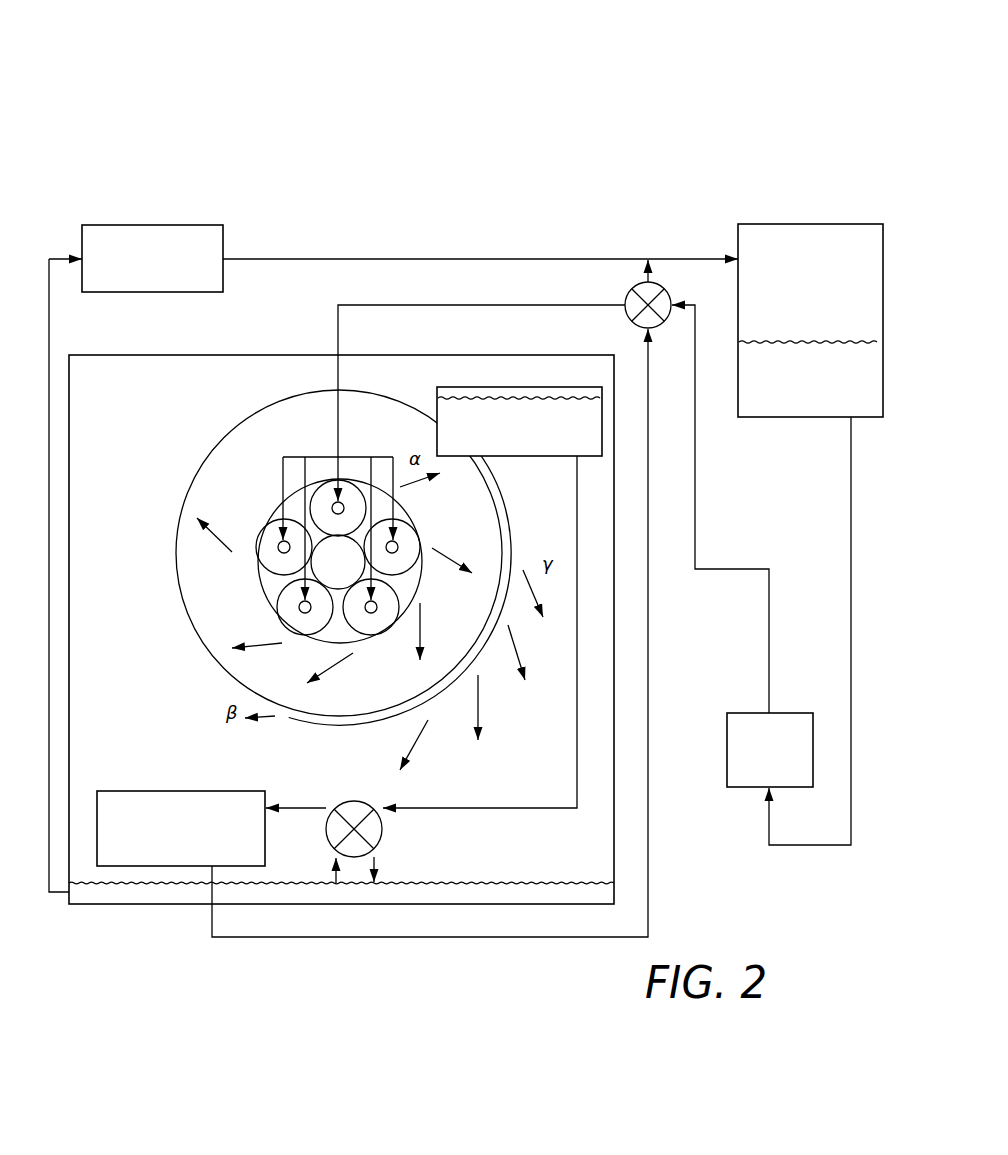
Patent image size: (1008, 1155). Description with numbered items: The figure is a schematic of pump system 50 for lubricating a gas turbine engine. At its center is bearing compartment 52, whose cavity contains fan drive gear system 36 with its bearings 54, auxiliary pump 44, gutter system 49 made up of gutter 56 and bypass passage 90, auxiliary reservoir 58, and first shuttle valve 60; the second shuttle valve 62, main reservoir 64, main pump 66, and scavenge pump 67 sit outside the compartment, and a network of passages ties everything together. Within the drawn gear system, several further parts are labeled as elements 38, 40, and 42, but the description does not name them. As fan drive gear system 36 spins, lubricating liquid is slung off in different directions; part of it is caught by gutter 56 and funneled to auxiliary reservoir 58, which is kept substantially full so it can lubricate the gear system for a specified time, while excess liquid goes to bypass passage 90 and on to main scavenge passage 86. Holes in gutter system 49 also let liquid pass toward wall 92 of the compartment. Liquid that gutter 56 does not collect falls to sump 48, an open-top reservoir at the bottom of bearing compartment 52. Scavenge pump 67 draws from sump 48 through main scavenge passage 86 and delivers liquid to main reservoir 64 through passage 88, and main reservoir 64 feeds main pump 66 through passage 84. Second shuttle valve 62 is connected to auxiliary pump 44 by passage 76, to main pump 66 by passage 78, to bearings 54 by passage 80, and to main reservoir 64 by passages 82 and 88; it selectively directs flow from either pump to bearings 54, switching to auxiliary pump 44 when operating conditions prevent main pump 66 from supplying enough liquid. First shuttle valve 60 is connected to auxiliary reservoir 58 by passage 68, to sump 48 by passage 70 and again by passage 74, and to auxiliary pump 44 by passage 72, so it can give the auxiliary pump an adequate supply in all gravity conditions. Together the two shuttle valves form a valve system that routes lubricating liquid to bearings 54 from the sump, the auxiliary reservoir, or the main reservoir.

The pump system 50 is at (192, 148).
The scavenge pump 67 is at (205, 226).
The passage 88 is at (505, 258).
The main reservoir 64 is at (775, 225).
The passage 80 is at (482, 305).
The second shuttle valve 62 is at (632, 294).
The passage 82 is at (652, 271).
The main scavenge passage 86 is at (50, 310).
The bearing compartment 52 is at (268, 352).
The auxiliary reservoir 58 is at (483, 387).
The gutter system 49 is at (207, 455).
The fan drive gear system 36 is at (278, 502).
The gutter 56 is at (180, 520).
The rolling elements 40 is at (255, 545).
The inner race 38 is at (260, 572).
The cage 42 is at (268, 592).
The bearings 54 is at (415, 545).
The bypass passage 90 is at (512, 532).
The passage 72 is at (288, 806).
The first shuttle valve 60 is at (354, 802).
The passage 70 is at (332, 870).
The passage 68 is at (505, 810).
The passage 74 is at (385, 860).
The wall 92 is at (613, 862).
The passage 76 is at (649, 587).
The passage 78 is at (748, 569).
The passage 84 is at (851, 450).
The main pump 66 is at (732, 713).
The auxiliary pump 44 is at (197, 791).
The sump 48 is at (148, 903).